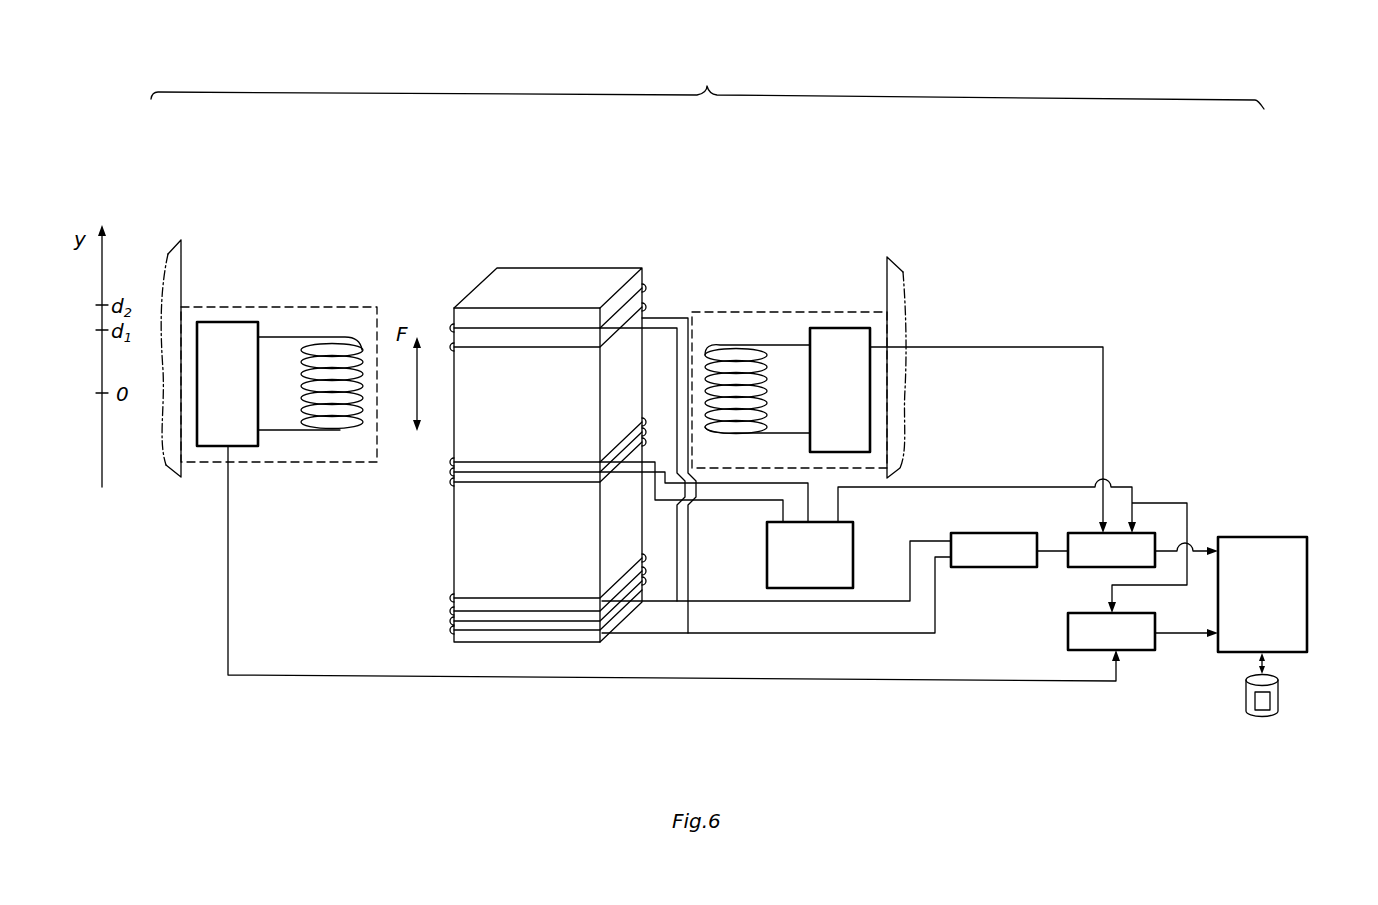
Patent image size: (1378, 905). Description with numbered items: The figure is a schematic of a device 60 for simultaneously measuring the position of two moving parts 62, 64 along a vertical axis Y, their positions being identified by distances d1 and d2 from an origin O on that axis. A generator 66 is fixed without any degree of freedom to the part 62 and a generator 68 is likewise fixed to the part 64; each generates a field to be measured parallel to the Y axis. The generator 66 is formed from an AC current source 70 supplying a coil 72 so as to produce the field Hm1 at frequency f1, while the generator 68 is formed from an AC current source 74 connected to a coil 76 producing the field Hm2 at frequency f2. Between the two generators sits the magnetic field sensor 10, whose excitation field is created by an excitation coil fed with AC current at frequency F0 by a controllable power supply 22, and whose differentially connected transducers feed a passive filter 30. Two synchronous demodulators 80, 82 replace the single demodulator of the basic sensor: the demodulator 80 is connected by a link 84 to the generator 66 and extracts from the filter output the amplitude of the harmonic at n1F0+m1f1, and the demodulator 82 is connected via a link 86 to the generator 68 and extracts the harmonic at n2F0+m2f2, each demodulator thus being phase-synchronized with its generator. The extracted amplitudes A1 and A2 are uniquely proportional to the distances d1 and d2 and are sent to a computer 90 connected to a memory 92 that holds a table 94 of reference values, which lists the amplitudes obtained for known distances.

The device for measuring the simultaneous position of two moving parts 60 is at (707, 84).
The moving part 62 is at (181, 254).
The moving part 64 is at (905, 282).
The generator 66 is at (243, 297).
The generator 68 is at (798, 304).
The AC current source 70 is at (227, 384).
The coil 72 is at (333, 347).
The AC current source 74 is at (840, 390).
The coil 76 is at (735, 362).
The superconducting magnet stack 10 is at (493, 292).
The controllable power supply 22 is at (977, 546).
The passive filter 30 is at (1009, 550).
The synchronous demodulator 80 is at (1143, 631).
The synchronous demodulator 82 is at (1143, 550).
The link 84 is at (860, 685).
The link 86 is at (1003, 347).
The computer 90 is at (1262, 605).
The memory 92 is at (1286, 676).
The table of reference values 94 is at (1263, 700).